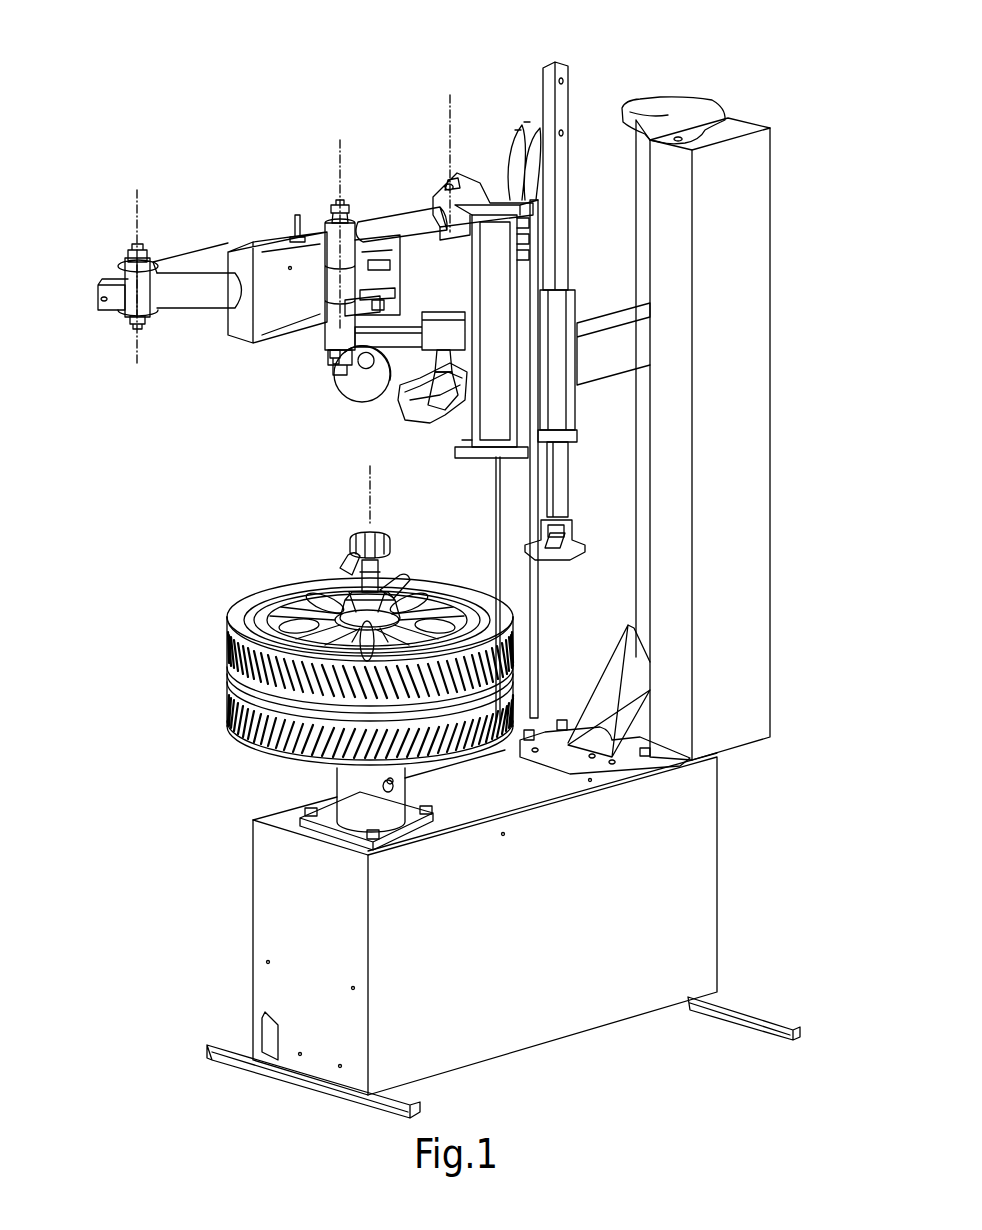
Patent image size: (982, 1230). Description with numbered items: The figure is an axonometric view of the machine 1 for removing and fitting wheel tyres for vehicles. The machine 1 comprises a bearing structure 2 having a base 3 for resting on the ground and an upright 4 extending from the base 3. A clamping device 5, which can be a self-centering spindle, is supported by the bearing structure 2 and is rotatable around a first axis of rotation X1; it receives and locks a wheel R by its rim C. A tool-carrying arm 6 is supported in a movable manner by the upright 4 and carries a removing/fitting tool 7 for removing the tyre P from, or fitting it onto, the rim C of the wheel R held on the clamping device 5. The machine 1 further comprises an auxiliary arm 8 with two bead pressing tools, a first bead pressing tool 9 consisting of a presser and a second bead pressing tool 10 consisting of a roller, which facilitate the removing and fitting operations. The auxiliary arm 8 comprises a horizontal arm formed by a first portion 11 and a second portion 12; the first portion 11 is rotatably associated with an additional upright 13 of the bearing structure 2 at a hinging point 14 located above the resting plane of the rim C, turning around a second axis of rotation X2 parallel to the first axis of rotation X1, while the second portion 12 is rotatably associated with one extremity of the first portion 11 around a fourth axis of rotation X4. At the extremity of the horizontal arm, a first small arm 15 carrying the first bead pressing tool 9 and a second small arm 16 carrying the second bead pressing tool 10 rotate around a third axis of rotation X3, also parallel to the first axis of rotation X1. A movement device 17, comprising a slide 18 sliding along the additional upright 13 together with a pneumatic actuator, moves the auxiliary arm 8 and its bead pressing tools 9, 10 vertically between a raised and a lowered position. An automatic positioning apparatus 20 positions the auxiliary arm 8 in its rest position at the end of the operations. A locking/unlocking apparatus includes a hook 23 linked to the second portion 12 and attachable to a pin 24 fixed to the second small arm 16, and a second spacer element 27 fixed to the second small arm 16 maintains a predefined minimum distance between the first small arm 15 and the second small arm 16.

The machine 1 is at (135, 84).
The bearing structure 2 is at (760, 630).
The base 3 is at (646, 880).
The upright 4 is at (740, 235).
The clamping device 5 is at (355, 795).
The tool-carrying arm 6 is at (568, 400).
The removing/fitting tool 7 is at (568, 537).
The auxiliary arm 8 is at (372, 196).
The first bead pressing tool 9 is at (418, 423).
The second bead pressing tool 10 is at (356, 380).
The first portion of the horizontal arm 11 is at (200, 258).
The second portion of the horizontal arm 12 is at (178, 298).
The additional upright 13 is at (505, 566).
The hinging point 14 is at (440, 195).
The first small arm 15 is at (388, 358).
The second small arm 16 is at (336, 218).
The movement device 17 is at (508, 296).
The slide 18 is at (505, 330).
The automatic positioning apparatus 20 is at (305, 309).
The hook 23 is at (356, 368).
The pin 24 is at (318, 320).
The second spacer element 27 is at (405, 300).
The rim C is at (268, 594).
The wheel R is at (205, 636).
The tyre P is at (228, 693).
The first axis of rotation X1 is at (360, 488).
The second axis of rotation X2 is at (440, 112).
The third axis of rotation X3 is at (330, 152).
The fourth axis of rotation X4 is at (130, 206).